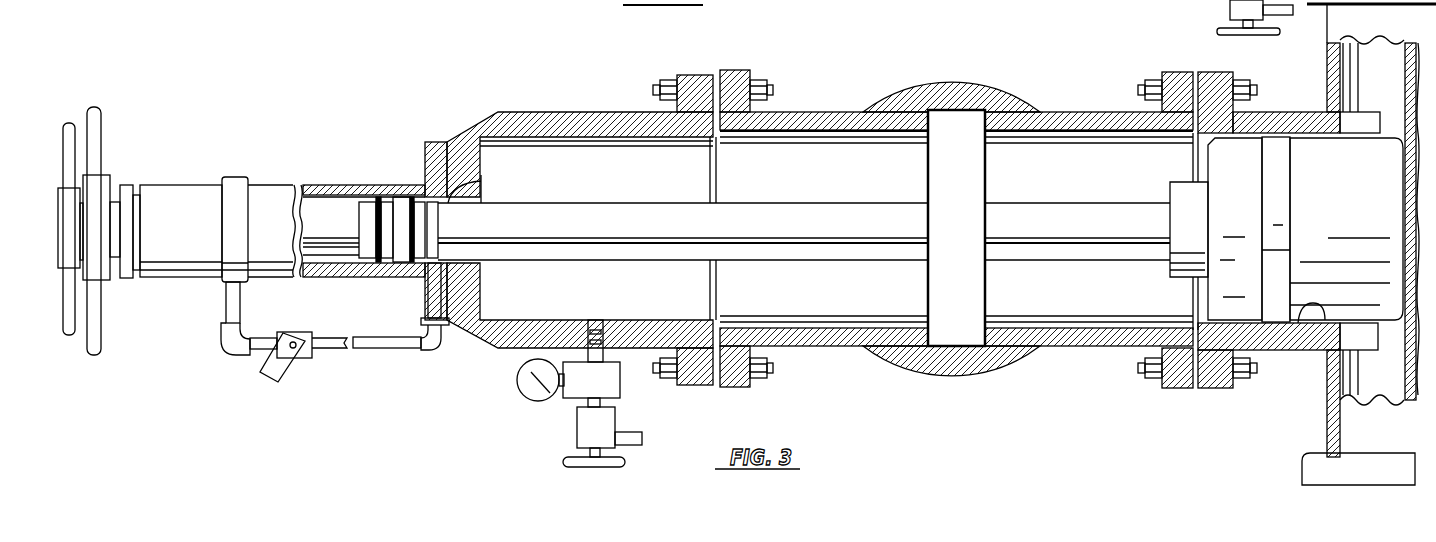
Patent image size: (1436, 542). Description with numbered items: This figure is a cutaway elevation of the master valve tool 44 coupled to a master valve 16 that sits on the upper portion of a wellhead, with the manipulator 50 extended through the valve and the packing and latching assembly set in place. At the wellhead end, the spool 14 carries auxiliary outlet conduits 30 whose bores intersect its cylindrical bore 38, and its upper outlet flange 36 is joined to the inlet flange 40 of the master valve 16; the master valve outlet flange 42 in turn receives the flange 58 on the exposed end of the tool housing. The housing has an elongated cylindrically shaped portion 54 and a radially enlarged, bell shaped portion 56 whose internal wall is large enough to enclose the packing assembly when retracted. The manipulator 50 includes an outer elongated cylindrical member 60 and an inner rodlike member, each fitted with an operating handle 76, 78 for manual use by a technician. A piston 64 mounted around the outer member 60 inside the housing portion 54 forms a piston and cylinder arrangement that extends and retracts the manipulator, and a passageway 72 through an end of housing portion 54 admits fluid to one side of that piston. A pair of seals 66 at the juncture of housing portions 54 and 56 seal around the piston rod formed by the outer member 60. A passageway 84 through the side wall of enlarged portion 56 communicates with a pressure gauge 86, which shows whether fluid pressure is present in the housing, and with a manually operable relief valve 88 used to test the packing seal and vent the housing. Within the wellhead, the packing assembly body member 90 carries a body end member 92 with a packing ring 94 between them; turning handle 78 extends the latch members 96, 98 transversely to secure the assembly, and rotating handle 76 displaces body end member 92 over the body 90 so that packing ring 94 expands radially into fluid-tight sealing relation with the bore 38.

The spool 14 is at (1268, 122).
The master valve 16 is at (922, 95).
The spool auxiliary outlet conduit 30 is at (1337, 33).
The spool outlet flange 36 is at (1215, 72).
The cylindrical bore 38 is at (1300, 330).
The master valve inlet flange 40 is at (1175, 78).
The master valve outlet flange 42 is at (732, 75).
The master valve tool 44 is at (243, 130).
The manipulator 50 is at (600, 177).
The elongated cylindrically shaped housing portion 54 is at (162, 193).
The radially enlarged housing portion 56 is at (565, 113).
The flange 58 is at (692, 80).
The outer elongated cylindrical member 60 is at (115, 210).
The piston 64 is at (393, 200).
The seals 66 is at (453, 200).
The passageway 72 is at (428, 288).
The operating handle 76 is at (98, 107).
The operating handle 78 is at (70, 122).
The passageway 84 is at (593, 330).
The pressure gauge 86 is at (517, 382).
The manually operable relief valve 88 is at (583, 425).
The packing assembly body member 90 is at (1313, 262).
The body end member 92 is at (1247, 297).
The packing ring 94 is at (1268, 160).
The latch member 96 is at (1347, 122).
The latch member 98 is at (1325, 405).